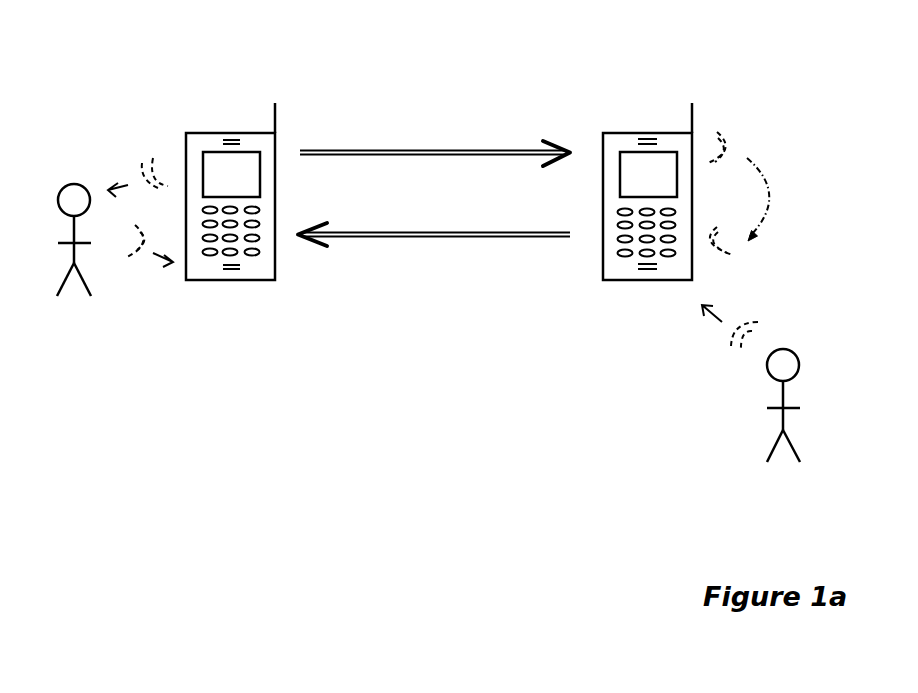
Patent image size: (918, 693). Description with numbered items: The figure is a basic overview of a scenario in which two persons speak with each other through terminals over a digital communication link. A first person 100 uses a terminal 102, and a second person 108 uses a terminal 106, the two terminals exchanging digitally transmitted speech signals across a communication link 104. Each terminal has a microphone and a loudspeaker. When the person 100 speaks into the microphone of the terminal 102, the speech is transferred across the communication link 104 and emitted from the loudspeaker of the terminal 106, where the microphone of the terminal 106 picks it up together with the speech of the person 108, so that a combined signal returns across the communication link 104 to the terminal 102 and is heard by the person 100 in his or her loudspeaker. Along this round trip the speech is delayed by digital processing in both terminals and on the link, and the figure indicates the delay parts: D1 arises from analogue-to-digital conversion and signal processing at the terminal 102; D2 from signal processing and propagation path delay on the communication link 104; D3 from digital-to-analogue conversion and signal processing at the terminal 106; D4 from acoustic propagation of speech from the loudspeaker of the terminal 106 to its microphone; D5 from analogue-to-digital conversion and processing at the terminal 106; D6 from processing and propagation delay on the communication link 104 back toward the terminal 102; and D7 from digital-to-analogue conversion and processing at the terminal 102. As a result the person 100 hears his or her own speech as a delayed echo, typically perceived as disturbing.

The person 100 is at (38, 270).
The terminal 102 is at (242, 210).
The communication link 104 is at (434, 206).
The terminal 106 is at (622, 206).
The person 108 is at (768, 445).
The delay from A/D conversion and signal processing at terminal 102 D1 is at (258, 140).
The delay on communication link toward terminal 106 D2 is at (382, 150).
The delay from D/A conversion and signal processing at terminal 106 D3 is at (678, 140).
The delay from speech propagation between loudspeaker and microphone of terminal 106 D4 is at (766, 193).
The delay from A/D conversion and signal processing at terminal 106 D5 is at (600, 257).
The delay on communication link toward terminal 102 D6 is at (497, 237).
The delay from D/A conversion and signal processing at terminal 102 D7 is at (260, 268).